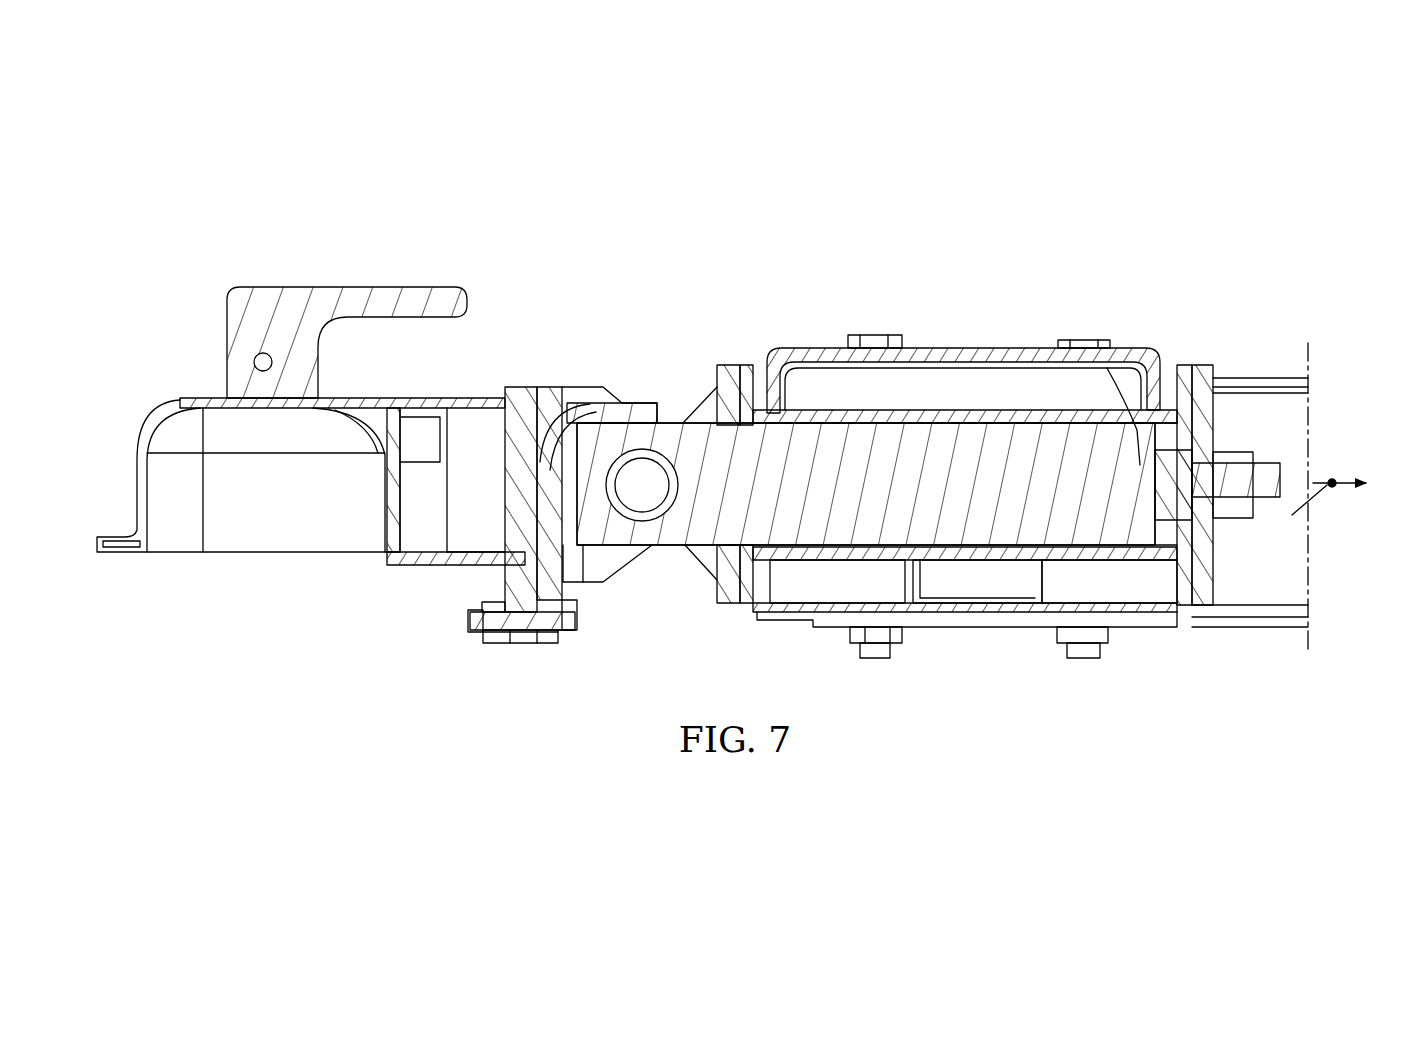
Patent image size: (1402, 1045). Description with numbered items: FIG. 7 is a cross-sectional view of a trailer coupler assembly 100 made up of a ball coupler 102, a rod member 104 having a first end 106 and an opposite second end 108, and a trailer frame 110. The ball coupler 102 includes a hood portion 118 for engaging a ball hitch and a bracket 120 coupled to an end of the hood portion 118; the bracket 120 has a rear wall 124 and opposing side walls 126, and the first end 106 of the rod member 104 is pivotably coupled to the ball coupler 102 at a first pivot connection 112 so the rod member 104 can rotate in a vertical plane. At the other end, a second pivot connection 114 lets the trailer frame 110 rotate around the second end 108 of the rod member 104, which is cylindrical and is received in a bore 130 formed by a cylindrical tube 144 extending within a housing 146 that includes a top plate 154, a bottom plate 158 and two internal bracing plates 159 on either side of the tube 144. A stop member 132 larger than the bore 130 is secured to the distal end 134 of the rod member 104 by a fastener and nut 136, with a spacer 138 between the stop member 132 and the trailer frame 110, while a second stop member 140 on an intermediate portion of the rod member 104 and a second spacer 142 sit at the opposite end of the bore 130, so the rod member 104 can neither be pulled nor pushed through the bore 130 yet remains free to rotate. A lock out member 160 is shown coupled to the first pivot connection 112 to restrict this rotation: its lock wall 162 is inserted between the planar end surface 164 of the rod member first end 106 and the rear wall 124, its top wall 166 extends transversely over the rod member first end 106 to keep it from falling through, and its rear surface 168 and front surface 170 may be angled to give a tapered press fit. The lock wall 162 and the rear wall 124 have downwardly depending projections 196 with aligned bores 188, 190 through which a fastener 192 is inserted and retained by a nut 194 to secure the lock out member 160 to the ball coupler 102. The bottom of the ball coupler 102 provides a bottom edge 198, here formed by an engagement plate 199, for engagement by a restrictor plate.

The trailer coupler assembly 100 is at (716, 264).
The ball coupler 102 is at (152, 422).
The rod member 104 is at (985, 520).
The first end 106 is at (730, 600).
The second end 108 is at (1113, 528).
The trailer frame 110 is at (1300, 387).
The first pivot connection 112 is at (565, 292).
The second pivot connection 114 is at (1058, 392).
The hood portion 118 is at (185, 398).
The bracket 120 is at (515, 385).
The rear wall 124 is at (502, 400).
The side walls 126 is at (548, 392).
The bore 130 is at (952, 423).
The stop member 132 is at (1205, 362).
The distal end 134 is at (1100, 338).
The nut 136 is at (1290, 497).
The spacer 138 is at (1188, 375).
The second stop member 140 is at (713, 390).
The second spacer 142 is at (748, 390).
The cylindrical tube 144 is at (832, 415).
The housing 146 is at (995, 355).
The top plate 154 is at (882, 355).
The bottom plate 158 is at (925, 612).
The internal bracing plates 159 is at (852, 590).
The lock out member 160 is at (585, 405).
The lock wall 162 is at (560, 630).
The end surface 164 is at (600, 560).
The top wall 166 is at (638, 410).
The rear surface 168 is at (540, 557).
The front surface 170 is at (540, 525).
The bore 188 is at (545, 632).
The bore 190 is at (522, 643).
The fastener 192 is at (468, 625).
The nut 194 is at (492, 640).
The projections 196 is at (513, 590).
The bottom edge 198 is at (415, 567).
The engagement plate 199 is at (398, 565).